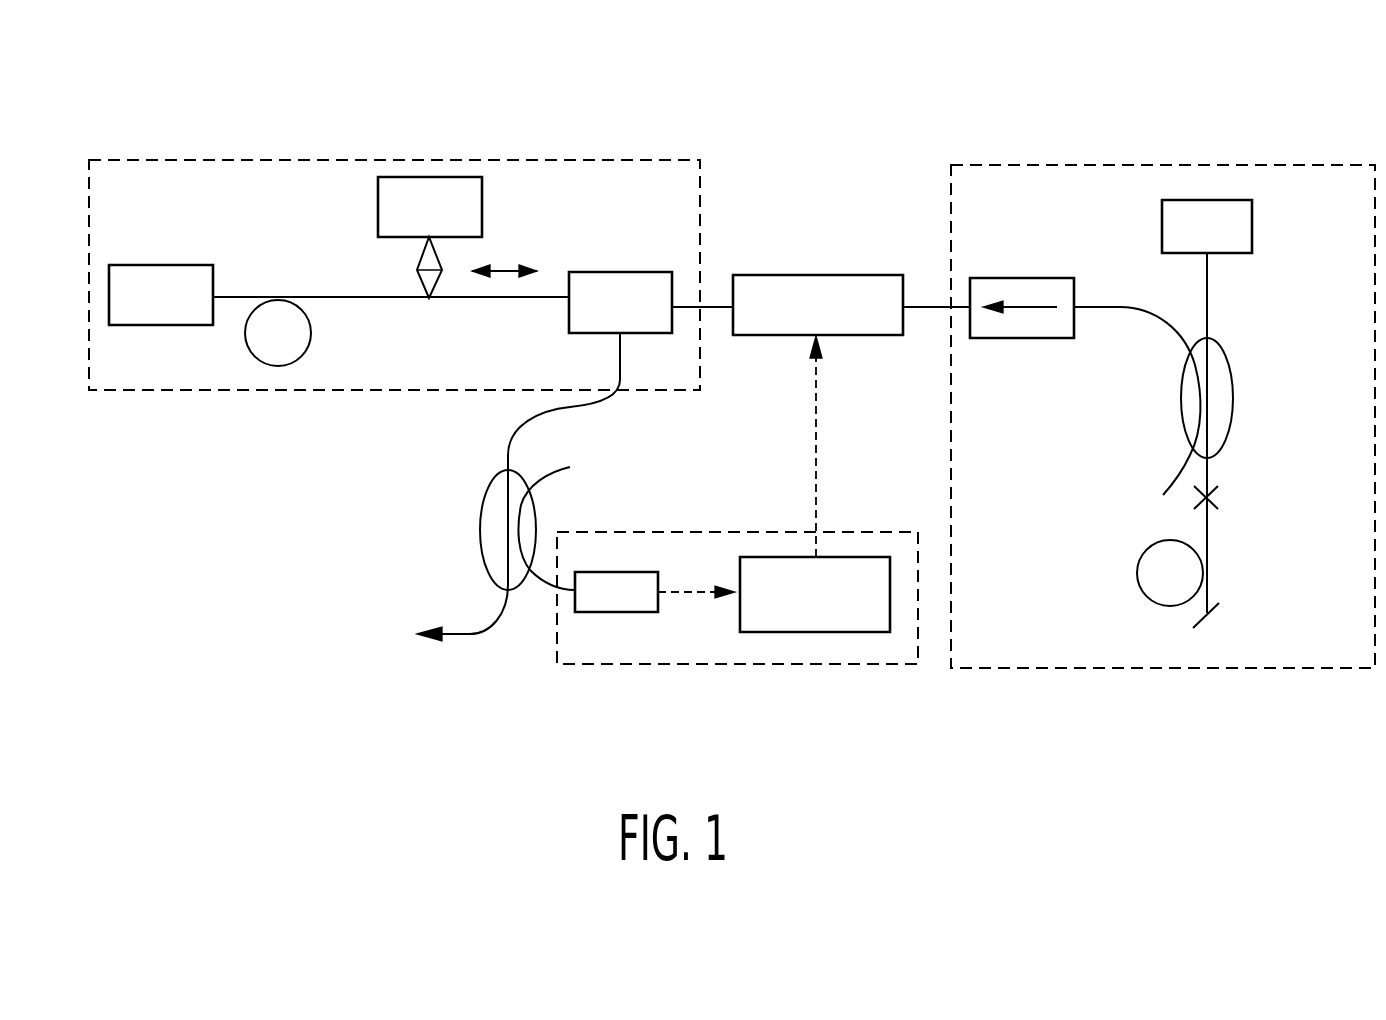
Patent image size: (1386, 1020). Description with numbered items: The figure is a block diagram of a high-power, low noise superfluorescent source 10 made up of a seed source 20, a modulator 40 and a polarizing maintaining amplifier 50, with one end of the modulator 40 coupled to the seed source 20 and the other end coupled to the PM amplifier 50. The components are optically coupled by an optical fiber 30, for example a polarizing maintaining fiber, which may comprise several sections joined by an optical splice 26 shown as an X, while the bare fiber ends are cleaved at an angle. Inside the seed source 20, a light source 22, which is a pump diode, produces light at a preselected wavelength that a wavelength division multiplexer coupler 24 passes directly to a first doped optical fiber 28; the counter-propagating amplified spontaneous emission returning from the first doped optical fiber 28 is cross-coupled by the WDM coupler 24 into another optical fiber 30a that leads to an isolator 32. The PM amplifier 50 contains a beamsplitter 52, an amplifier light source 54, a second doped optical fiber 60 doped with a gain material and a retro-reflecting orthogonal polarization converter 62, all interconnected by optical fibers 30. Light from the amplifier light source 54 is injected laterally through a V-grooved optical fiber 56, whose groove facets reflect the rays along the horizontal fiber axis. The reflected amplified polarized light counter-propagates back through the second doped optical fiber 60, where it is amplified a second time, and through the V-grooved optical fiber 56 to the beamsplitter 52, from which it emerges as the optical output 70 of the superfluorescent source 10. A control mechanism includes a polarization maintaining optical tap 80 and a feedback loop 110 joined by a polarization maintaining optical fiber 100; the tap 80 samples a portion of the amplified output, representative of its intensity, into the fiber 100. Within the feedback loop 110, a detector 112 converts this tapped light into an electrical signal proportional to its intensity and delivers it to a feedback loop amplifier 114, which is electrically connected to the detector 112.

The superfluorescent source 10 is at (1343, 78).
The seed source 20 is at (1160, 668).
The light source 22 is at (1252, 227).
The wavelength division multiplexer coupler 24 is at (1183, 400).
The splice 26 is at (1198, 500).
The first doped optical fiber 28 is at (1150, 580).
The optical fiber 30 is at (333, 297).
The another optical fiber 30a is at (1153, 320).
The isolator 32 is at (1022, 285).
The modulator 40 is at (818, 282).
The polarizing maintaining amplifier 50 is at (653, 160).
The beamsplitter 52 is at (621, 278).
The amplifier light source 54 is at (433, 187).
The V-grooved optical fiber 56 is at (417, 283).
The second doped optical fiber 60 is at (275, 358).
The retro-reflecting orthogonal polarization converter 62 is at (163, 272).
The optical output 70 is at (343, 675).
The polarization maintaining optical tap 80 is at (481, 530).
The polarization maintaining optical fiber 100 is at (543, 583).
The feedback loop 110 is at (655, 664).
The detector 112 is at (617, 572).
The feedback loop amplifier 114 is at (823, 620).